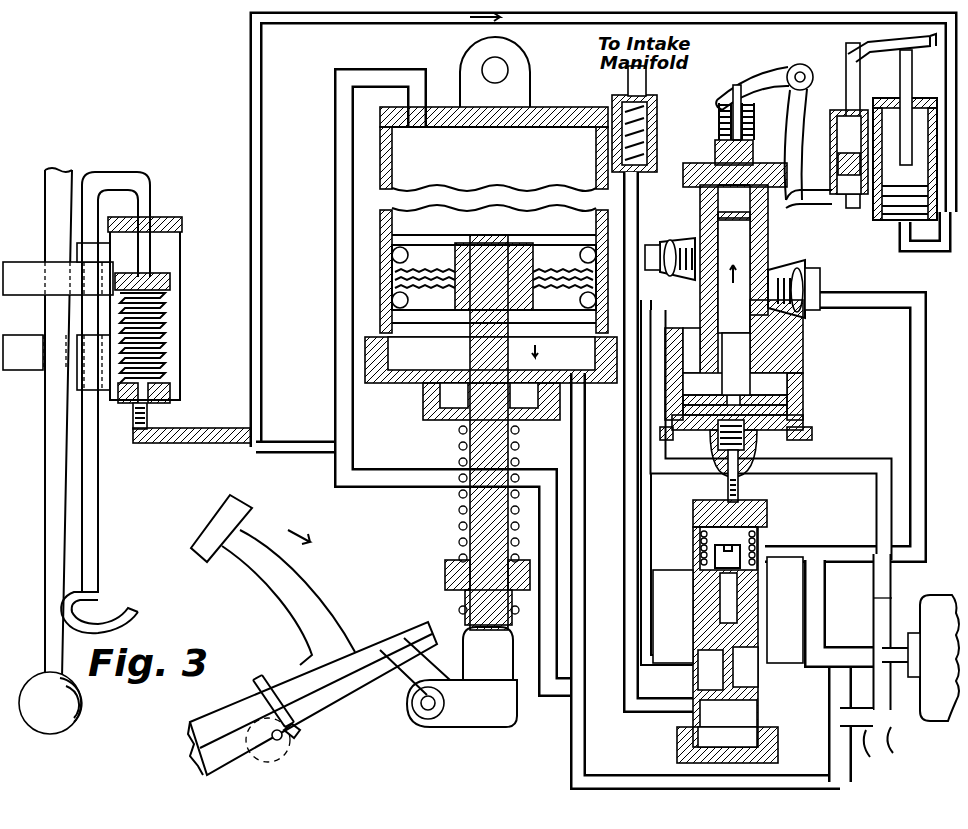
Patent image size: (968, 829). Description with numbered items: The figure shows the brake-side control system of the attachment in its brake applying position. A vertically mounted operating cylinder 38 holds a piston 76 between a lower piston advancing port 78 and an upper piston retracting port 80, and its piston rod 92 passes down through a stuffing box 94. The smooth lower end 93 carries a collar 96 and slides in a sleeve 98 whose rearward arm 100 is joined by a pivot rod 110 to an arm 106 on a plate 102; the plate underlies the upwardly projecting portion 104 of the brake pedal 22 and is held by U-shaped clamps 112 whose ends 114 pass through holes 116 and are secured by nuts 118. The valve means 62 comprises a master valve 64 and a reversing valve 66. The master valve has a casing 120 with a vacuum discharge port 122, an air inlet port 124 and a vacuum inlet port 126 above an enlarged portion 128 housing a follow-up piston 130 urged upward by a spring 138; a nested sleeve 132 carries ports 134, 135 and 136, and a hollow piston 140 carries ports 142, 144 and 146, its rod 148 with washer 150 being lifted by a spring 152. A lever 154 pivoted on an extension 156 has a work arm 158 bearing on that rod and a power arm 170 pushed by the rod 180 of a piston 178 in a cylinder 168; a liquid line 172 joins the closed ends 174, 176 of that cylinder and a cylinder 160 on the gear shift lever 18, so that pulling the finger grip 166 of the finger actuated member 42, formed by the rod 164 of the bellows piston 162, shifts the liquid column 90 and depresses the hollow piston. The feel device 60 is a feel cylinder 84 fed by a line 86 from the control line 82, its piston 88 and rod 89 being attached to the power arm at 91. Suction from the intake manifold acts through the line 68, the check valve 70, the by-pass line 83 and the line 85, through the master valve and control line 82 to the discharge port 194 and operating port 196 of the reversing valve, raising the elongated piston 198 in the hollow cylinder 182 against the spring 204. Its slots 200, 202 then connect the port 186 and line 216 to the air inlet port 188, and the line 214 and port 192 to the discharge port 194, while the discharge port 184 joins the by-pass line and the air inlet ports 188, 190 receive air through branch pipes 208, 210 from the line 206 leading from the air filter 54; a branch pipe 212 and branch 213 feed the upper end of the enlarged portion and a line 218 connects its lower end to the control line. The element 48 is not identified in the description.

The gear shift lever 18 is at (45, 412).
The brake pedal 22 is at (215, 525).
The operating cylinder 38 is at (385, 220).
The finger actuated member 42 is at (100, 466).
The valve chamber 48 is at (772, 386).
The air filter 54 is at (928, 722).
The feel device 60 is at (822, 150).
The valve means 62 is at (800, 348).
The master valve 64 is at (770, 216).
The reversing valve 66 is at (768, 525).
The line 68 is at (652, 84).
The check valve 70 is at (648, 140).
The piston 76 is at (395, 270).
The piston advancing port 78 is at (582, 372).
The piston retracting port 80 is at (418, 112).
The vacuum control line 82 is at (910, 376).
The by-pass suction line 83 is at (648, 491).
The feel cylinder 84 is at (838, 158).
The line 85 is at (694, 240).
The line 86 is at (898, 248).
The piston 88 is at (838, 176).
The piston rod 89 is at (838, 140).
The liquid column 90 is at (940, 256).
The attachment point 91 is at (868, 46).
The piston rod 92 is at (468, 500).
The lower end of piston rod 93 is at (465, 600).
The stuffing box 94 is at (448, 425).
The collar 96 is at (444, 574).
The sleeve 98 is at (465, 632).
The arm 100 is at (496, 722).
The plate 102 is at (355, 688).
The pedal portion 104 is at (290, 656).
The arm 106 is at (408, 678).
The pivot rod 110 is at (424, 712).
The clamps 112 is at (256, 686).
The clamp ends 114 is at (282, 738).
The holes 116 is at (282, 747).
The nuts 118 is at (293, 730).
The cylindrical casing 120 is at (805, 246).
The vacuum discharge port 122 is at (690, 272).
The air inlet port 124 is at (698, 276).
The vacuum inlet port 126 is at (790, 322).
The enlarged portion 128 is at (792, 412).
The follow-up piston 130 is at (792, 398).
The sleeve 132 is at (702, 196).
The vacuum discharge port 134 is at (708, 222).
The air inlet port 135 is at (734, 348).
The vacuum inlet port 136 is at (798, 265).
The spring means 138 is at (745, 430).
The hollow piston 140 is at (748, 157).
The vacuum discharge port 142 is at (734, 272).
The pressure relief port 144 is at (736, 364).
The inlet port 146 is at (780, 336).
The piston rod 148 is at (718, 118).
The washer 150 is at (730, 90).
The spring means 152 is at (764, 121).
The lever 154 is at (822, 66).
The extension 156 is at (815, 143).
The work arm 158 is at (742, 94).
The cylinder 160 is at (178, 296).
The piston 162 is at (168, 280).
The piston rod 164 is at (143, 205).
The finger grip 166 is at (112, 617).
The cylinder 168 is at (899, 172).
The power arm 170 is at (923, 107).
The liquid line 172 is at (572, 24).
The closed end 174 is at (165, 392).
The closed end 176 is at (928, 222).
The piston 178 is at (920, 110).
The piston rod 180 is at (906, 76).
The hollow cylinder 182 is at (768, 505).
The vacuum discharge port 184 is at (710, 718).
The port 186 is at (690, 713).
The air inlet port 188 is at (688, 594).
The air inlet port 190 is at (778, 740).
The port 192 is at (728, 723).
The vacuum discharge port 194 is at (748, 640).
The piston operating port 196 is at (770, 540).
The elongated piston 198 is at (700, 745).
The axial slot 200 is at (697, 667).
The elongated axial slot 202 is at (760, 668).
The spring means 204 is at (700, 536).
The line 206 is at (895, 710).
The branch pipe 208 is at (862, 616).
The branch pipe 210 is at (852, 748).
The branch pipe 212 is at (890, 594).
The branch 213 is at (665, 395).
The line 214 is at (567, 708).
The line 216 is at (334, 430).
The line 218 is at (843, 458).